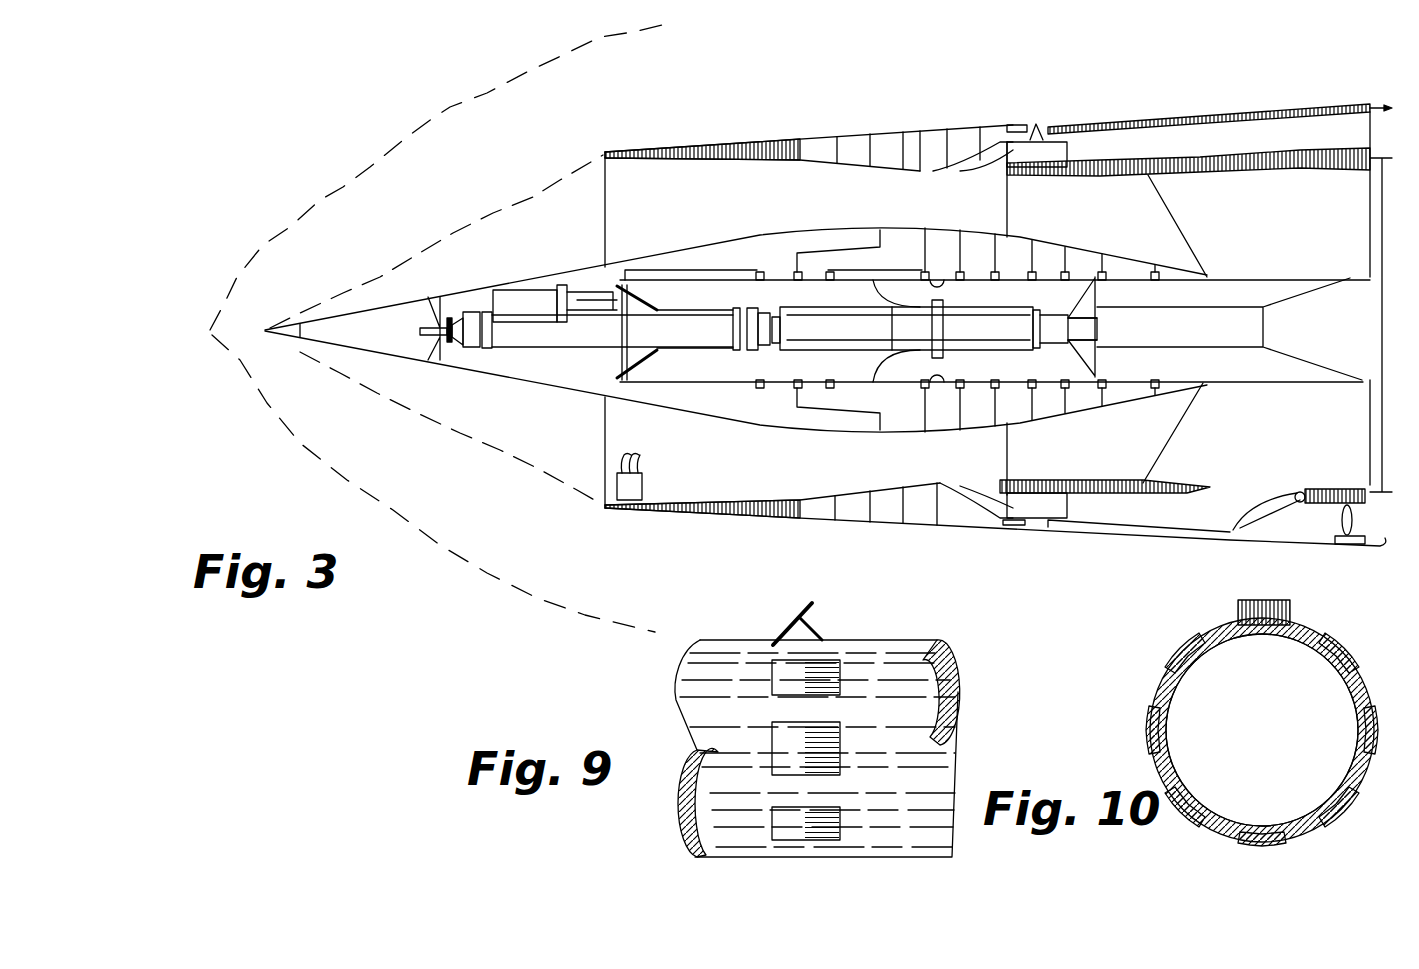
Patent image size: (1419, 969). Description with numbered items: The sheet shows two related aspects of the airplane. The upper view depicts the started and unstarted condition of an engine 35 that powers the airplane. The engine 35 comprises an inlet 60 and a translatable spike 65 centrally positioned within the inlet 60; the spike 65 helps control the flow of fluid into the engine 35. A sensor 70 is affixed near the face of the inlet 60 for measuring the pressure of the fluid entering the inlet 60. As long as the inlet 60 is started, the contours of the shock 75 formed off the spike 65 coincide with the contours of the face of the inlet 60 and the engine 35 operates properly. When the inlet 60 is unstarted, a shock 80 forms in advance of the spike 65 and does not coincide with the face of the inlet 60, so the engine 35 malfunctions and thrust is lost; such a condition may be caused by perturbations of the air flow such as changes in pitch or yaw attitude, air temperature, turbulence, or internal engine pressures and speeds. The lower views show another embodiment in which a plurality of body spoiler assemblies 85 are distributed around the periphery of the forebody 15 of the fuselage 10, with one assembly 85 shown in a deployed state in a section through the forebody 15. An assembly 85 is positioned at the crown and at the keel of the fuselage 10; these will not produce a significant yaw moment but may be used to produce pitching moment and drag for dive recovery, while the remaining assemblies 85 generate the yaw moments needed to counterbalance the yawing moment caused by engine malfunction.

In FIG. 9, the fuselage 10 is at (905, 755).
In FIG. 10, the fuselage 10 is at (1185, 760).
In FIG. 10, the forebody 15 is at (1370, 700).
In FIG. 3, the engine 35 is at (1040, 106).
In FIG. 3, the inlet 60 is at (703, 145).
In FIG. 3, the translatable spike 65 is at (497, 378).
In FIG. 3, the sensor 70 is at (644, 490).
In FIG. 3, the shock 75 is at (450, 108).
In FIG. 3, the shock 80 is at (440, 548).
In FIG. 9, the body spoiler assembly 85 is at (770, 672).
In FIG. 10, the body spoiler assembly 85 is at (1343, 655).